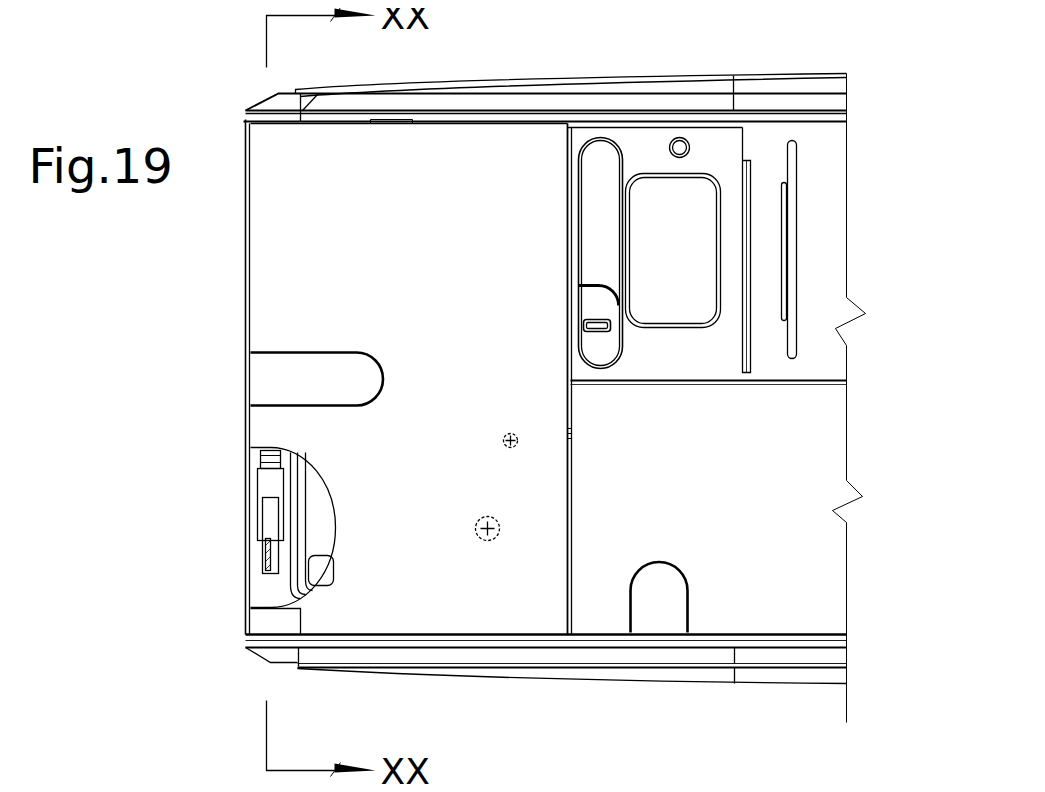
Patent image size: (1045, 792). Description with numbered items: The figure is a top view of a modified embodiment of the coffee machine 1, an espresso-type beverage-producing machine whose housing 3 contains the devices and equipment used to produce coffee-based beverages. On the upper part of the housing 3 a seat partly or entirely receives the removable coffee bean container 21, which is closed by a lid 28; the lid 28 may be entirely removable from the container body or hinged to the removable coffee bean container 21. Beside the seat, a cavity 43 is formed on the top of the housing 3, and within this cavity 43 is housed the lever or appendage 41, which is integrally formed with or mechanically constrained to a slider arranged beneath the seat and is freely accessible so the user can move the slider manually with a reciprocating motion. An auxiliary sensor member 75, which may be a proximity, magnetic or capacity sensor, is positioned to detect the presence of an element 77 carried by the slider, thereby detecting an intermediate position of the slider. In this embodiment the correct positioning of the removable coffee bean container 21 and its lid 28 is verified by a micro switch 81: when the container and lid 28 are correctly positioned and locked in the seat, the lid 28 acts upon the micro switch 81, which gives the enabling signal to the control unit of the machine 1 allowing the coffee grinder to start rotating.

The coffee machine 1 is at (872, 232).
The housing 3 is at (572, 670).
The removable coffee bean container 21 is at (226, 172).
The lid 28 is at (385, 285).
The lever or appendage 41 is at (598, 318).
The cavity 43 is at (603, 238).
The auxiliary sensor member 75 is at (518, 436).
The element 77 is at (474, 527).
The micro switch 81 is at (272, 527).